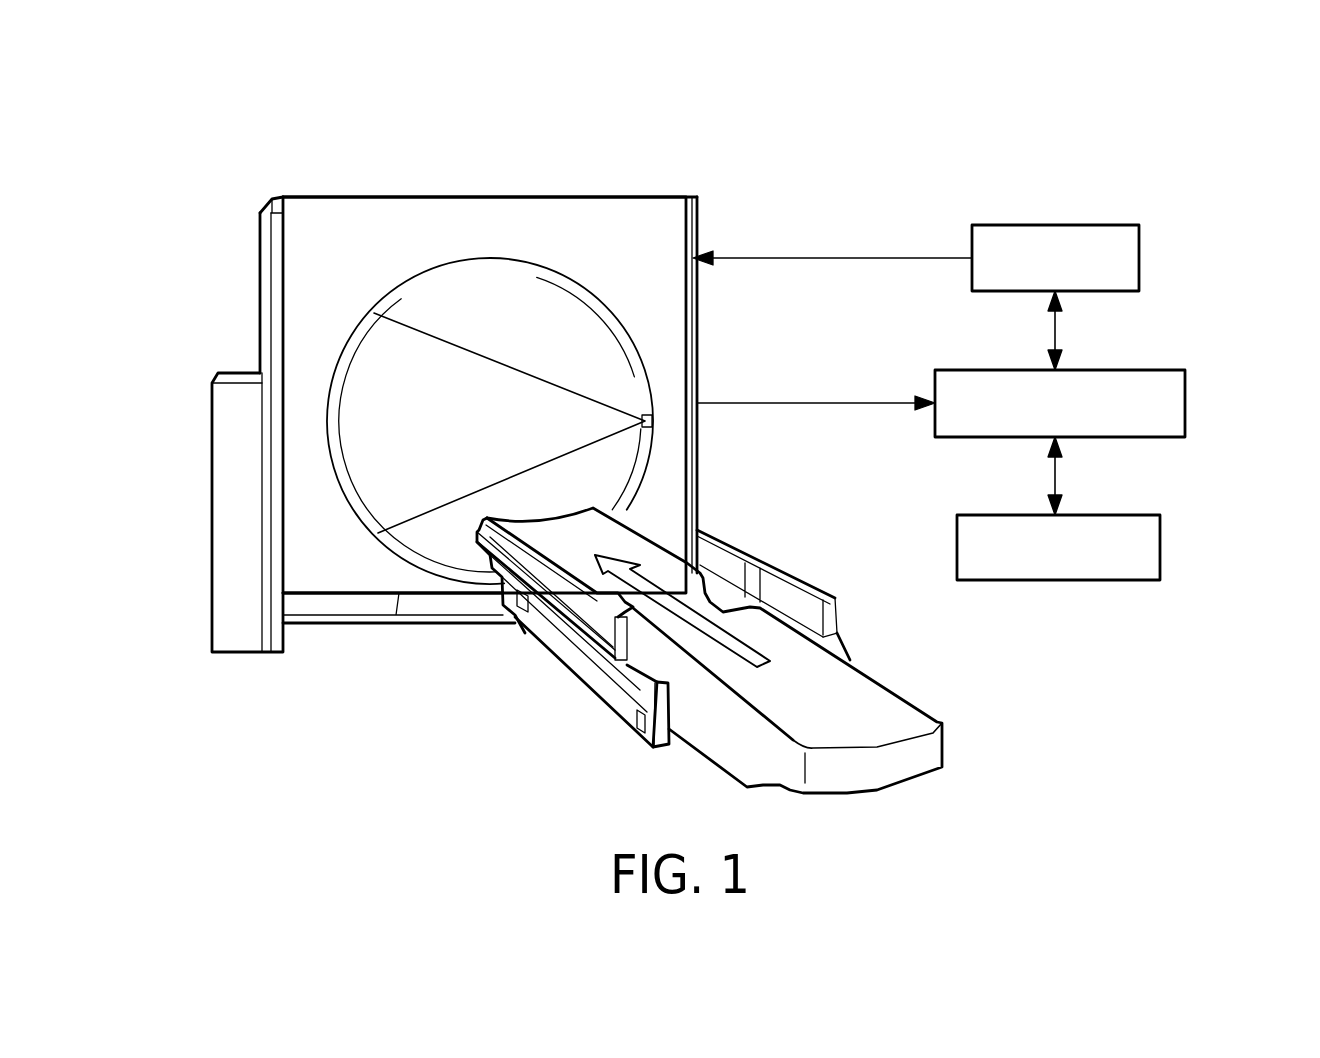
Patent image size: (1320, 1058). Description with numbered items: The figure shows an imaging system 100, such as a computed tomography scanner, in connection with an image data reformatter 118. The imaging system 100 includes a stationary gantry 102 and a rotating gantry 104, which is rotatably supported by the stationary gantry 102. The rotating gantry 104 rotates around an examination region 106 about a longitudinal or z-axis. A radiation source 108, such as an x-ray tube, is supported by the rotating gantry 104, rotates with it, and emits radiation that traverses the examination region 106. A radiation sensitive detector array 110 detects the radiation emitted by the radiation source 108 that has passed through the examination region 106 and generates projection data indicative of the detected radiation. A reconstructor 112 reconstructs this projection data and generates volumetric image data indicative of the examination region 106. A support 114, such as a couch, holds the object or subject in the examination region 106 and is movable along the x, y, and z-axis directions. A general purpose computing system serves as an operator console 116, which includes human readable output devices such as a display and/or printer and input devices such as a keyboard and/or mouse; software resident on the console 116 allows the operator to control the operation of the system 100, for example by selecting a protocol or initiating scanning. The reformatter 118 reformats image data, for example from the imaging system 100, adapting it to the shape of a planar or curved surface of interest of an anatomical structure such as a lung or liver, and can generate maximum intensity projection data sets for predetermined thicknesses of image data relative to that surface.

The imaging system 100 is at (222, 134).
The stationary gantry 102 is at (344, 197).
The rotating gantry 104 is at (386, 297).
The examination region 106 is at (486, 436).
The radiation source 108 is at (652, 421).
The radiation sensitive detector array 110 is at (352, 362).
The reconstructor 112 is at (1185, 400).
The support 114 is at (872, 697).
The operator console 116 is at (1139, 253).
The reformatter 118 is at (1153, 527).